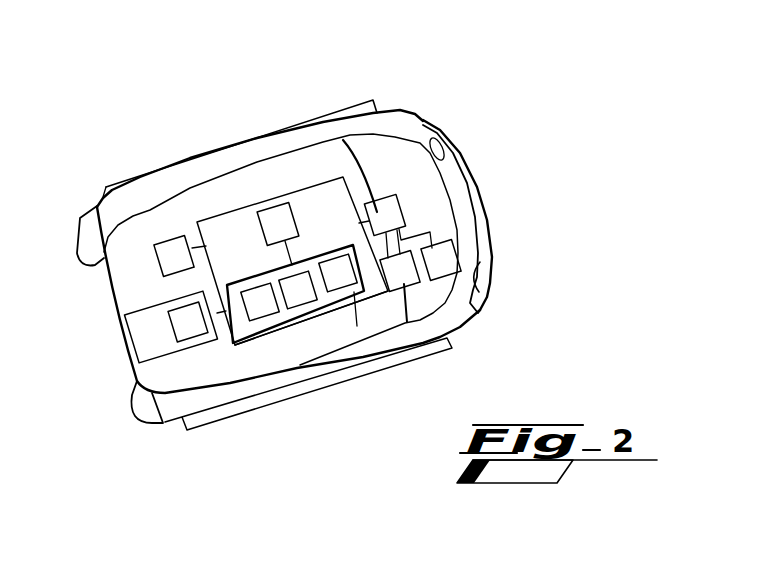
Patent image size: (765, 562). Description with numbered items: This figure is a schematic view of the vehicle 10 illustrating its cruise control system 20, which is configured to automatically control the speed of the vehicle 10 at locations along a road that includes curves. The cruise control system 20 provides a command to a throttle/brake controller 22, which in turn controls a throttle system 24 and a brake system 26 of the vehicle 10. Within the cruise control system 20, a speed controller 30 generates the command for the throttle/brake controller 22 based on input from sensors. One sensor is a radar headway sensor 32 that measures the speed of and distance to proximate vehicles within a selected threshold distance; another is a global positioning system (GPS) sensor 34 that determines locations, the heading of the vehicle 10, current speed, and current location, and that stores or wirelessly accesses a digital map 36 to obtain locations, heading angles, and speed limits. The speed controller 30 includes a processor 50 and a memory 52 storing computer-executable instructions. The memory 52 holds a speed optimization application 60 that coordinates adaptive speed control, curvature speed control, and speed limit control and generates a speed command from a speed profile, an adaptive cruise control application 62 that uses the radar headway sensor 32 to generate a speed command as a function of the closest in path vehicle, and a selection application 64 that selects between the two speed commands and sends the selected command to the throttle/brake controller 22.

The vehicle 10 is at (420, 90).
The cruise control system 20 is at (258, 186).
The throttle/brake controller 22 is at (376, 224).
The throttle system 24 is at (391, 280).
The brake system 26 is at (432, 269).
The speed controller 30 is at (252, 340).
The radar headway sensor 32 is at (165, 265).
The global positioning system (GPS) sensor 34 is at (143, 339).
The digital map 36 is at (179, 331).
The processor 50 is at (269, 233).
The memory 52 is at (302, 316).
The speed optimization application 60 is at (251, 311).
The adaptive cruise control application 62 is at (289, 299).
The selection application 64 is at (329, 282).